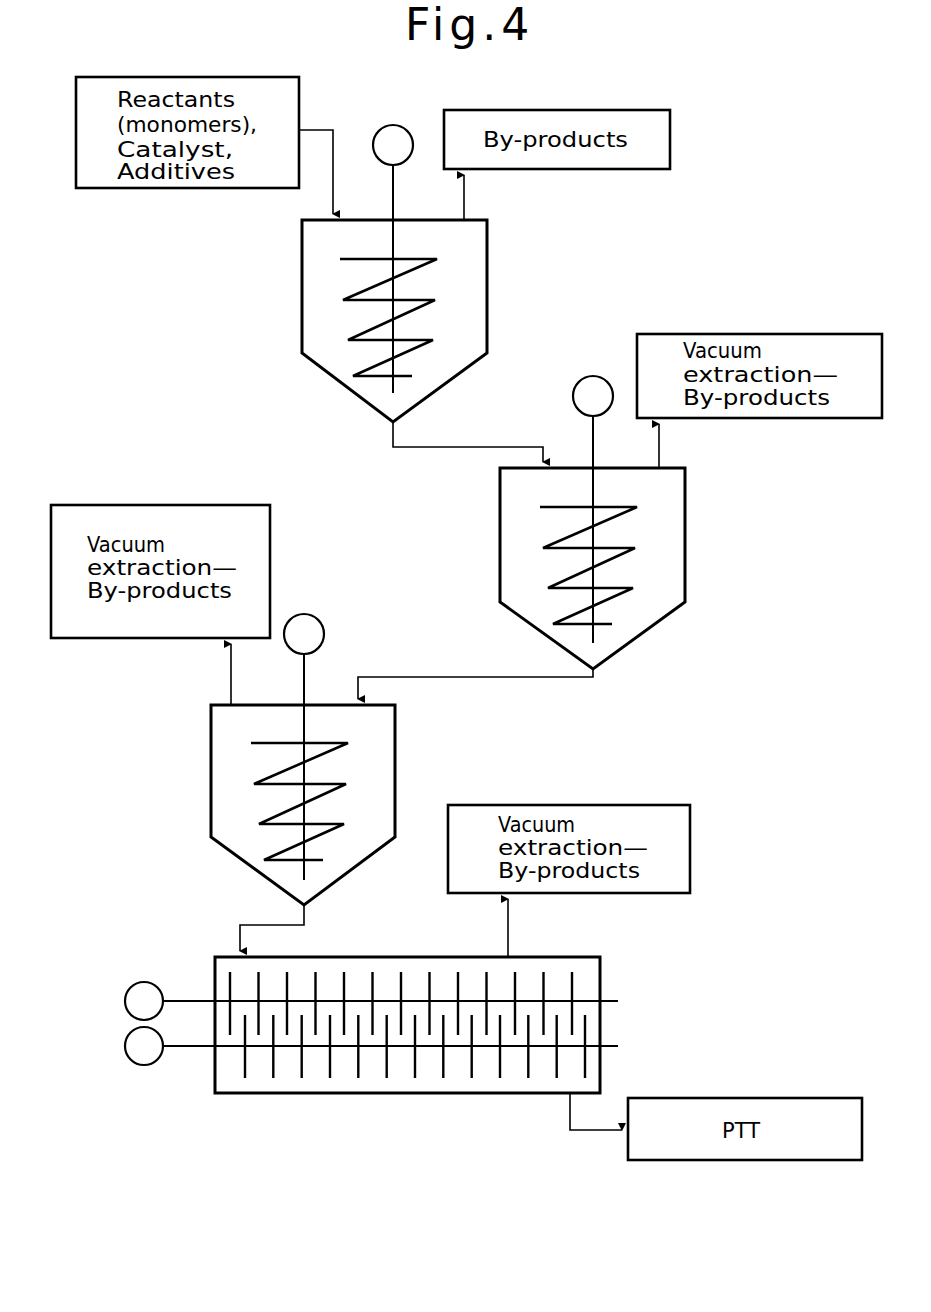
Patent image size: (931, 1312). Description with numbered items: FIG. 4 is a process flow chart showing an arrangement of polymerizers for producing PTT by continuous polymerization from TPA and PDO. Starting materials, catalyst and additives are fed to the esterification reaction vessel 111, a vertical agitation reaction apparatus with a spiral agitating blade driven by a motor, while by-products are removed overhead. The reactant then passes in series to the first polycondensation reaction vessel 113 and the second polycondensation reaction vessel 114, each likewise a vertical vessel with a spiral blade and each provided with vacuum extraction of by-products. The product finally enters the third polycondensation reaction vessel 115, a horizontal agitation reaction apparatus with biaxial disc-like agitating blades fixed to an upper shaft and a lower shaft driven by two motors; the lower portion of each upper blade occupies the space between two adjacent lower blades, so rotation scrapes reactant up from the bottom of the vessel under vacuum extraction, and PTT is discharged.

The esterification reaction vessel 111 is at (487, 262).
The first polycondensation reaction vessel 113 is at (500, 497).
The second polycondensation reaction vessel 114 is at (395, 733).
The third polycondensation reaction vessel 115 is at (312, 1093).